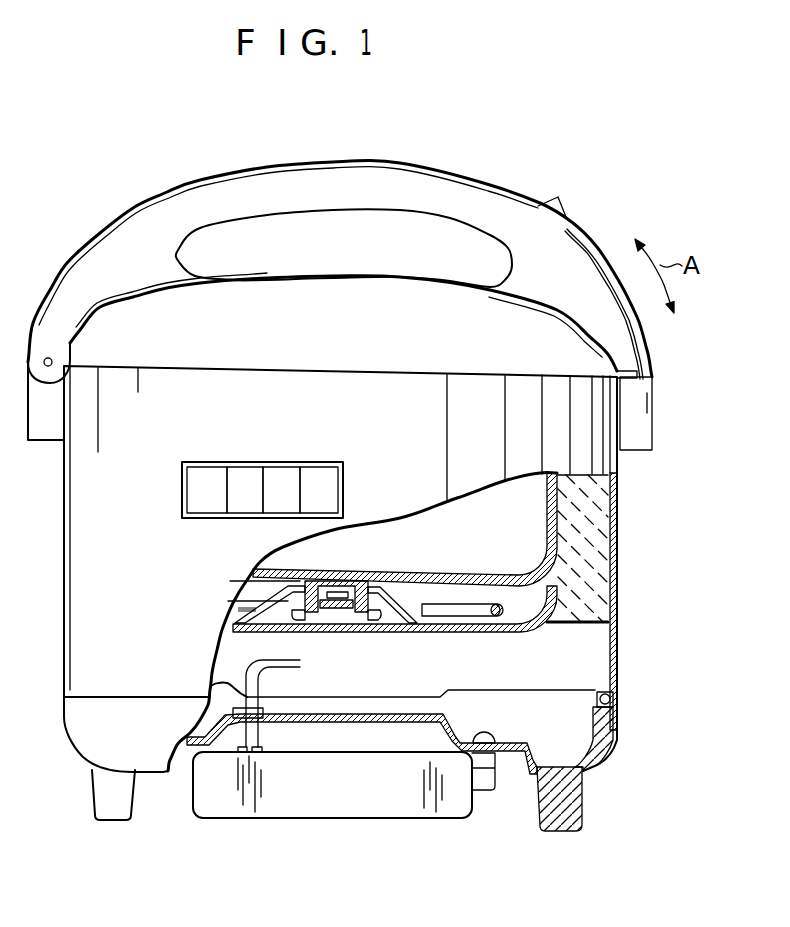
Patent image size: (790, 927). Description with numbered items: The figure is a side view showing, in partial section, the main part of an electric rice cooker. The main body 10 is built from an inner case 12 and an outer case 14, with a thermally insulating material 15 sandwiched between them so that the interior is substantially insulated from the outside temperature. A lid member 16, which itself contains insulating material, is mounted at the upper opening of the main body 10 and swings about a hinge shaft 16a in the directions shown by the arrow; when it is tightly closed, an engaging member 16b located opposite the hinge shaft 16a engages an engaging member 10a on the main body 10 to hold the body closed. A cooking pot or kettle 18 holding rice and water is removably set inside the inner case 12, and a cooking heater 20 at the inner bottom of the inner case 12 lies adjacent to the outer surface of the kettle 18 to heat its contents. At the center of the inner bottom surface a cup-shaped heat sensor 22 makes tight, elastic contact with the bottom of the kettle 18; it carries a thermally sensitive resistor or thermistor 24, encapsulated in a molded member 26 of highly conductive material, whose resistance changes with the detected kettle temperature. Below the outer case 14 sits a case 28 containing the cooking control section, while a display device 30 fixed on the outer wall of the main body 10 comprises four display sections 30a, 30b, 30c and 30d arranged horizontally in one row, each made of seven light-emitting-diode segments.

The main body 10 is at (624, 596).
The engaging member 10a is at (641, 410).
The inner case 12 is at (552, 538).
The outer case 14 is at (618, 527).
The thermally insulating material 15 is at (597, 557).
The lid member 16 is at (327, 273).
The hinge shaft 16a is at (53, 360).
The engaging member 16b is at (592, 233).
The cooking pot or kettle 18 is at (548, 510).
The cooking heater 20 is at (503, 611).
The cup-shaped heat sensor 22 is at (376, 600).
The thermally sensitive resistor (thermistor) 24 is at (335, 590).
The molded member 26 is at (338, 608).
The case 28 is at (314, 808).
The display device 30 is at (282, 471).
The display section 30a is at (200, 473).
The display section 30b is at (242, 473).
The display section 30c is at (284, 472).
The display section 30d is at (330, 473).